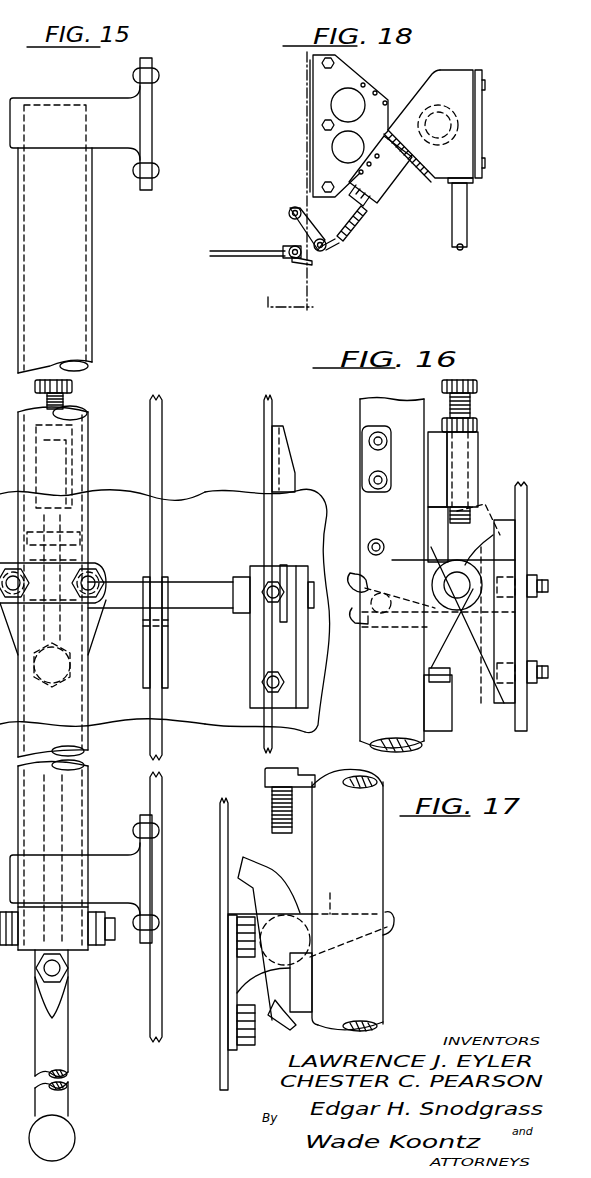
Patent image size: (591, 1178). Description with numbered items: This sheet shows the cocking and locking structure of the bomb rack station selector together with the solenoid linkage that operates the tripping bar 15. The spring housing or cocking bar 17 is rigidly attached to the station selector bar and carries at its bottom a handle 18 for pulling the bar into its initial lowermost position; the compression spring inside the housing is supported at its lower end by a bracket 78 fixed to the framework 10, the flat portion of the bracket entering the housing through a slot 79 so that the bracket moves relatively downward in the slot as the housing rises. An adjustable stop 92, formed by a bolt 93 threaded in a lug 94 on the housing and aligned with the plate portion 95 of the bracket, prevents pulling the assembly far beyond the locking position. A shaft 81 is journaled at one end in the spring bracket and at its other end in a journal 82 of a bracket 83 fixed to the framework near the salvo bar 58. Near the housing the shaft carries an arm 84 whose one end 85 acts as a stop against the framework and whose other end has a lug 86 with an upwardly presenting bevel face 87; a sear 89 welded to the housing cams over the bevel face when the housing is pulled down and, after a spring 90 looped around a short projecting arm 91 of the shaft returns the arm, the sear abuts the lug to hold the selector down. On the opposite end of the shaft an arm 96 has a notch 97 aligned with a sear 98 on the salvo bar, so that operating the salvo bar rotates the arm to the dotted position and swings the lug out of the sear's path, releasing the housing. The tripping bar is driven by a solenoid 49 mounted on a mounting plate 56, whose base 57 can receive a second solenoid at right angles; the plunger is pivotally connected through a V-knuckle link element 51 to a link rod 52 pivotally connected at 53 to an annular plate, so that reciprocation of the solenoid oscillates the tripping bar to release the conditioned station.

In FIG. 15, the framework 10 is at (119, 481).
In FIG. 16, the framework 10 is at (522, 632).
In FIG. 15, the tripping bar 15 is at (146, 137).
In FIG. 15, the housing (cocking bar) 17 is at (82, 242).
In FIG. 16, the housing (cocking bar) 17 is at (380, 752).
In FIG. 17, the housing (cocking bar) 17 is at (383, 978).
In FIG. 15, the handle 18 is at (68, 1136).
In FIG. 18, the solenoid 49 is at (396, 203).
In FIG. 18, the V-knuckle link element 51 is at (296, 243).
In FIG. 18, the link rod 52 is at (258, 256).
In FIG. 18, the pivotal connection 53 is at (310, 262).
In FIG. 18, the mounting plate 56 is at (469, 141).
In FIG. 18, the base 57 is at (434, 92).
In FIG. 16, the salvo bar 58 is at (265, 452).
In FIG. 15, the bracket 78 is at (82, 540).
In FIG. 15, the slot 79 is at (62, 830).
In FIG. 16, the shaft 81 is at (192, 592).
In FIG. 16, the journal 82 is at (443, 620).
In FIG. 16, the bracket 83 is at (250, 664).
In FIG. 16, the arm 84 is at (510, 548).
In FIG. 17, the arm 84 is at (263, 875).
In FIG. 16, the stop end 85 is at (499, 536).
In FIG. 16, the lug 86 is at (445, 681).
In FIG. 17, the lug 86 is at (268, 1012).
In FIG. 17, the bevel face 87 is at (296, 1032).
In FIG. 16, the sear 89 is at (449, 718).
In FIG. 17, the sear 89 is at (312, 990).
In FIG. 15, the spring 90 is at (169, 664).
In FIG. 15, the projecting arm 91 is at (172, 632).
In FIG. 16, the adjustable stop 92 is at (489, 453).
In FIG. 15, the bolt 93 is at (64, 404).
In FIG. 16, the bolt 93 is at (478, 383).
In FIG. 16, the lug 94 is at (468, 440).
In FIG. 15, the plate portion 95 is at (88, 562).
In FIG. 16, the arm 96 is at (282, 564).
In FIG. 17, the arm 96 is at (330, 912).
In FIG. 16, the notch 97 is at (357, 568).
In FIG. 17, the notch 97 is at (392, 915).
In FIG. 16, the sear 98 is at (278, 468).